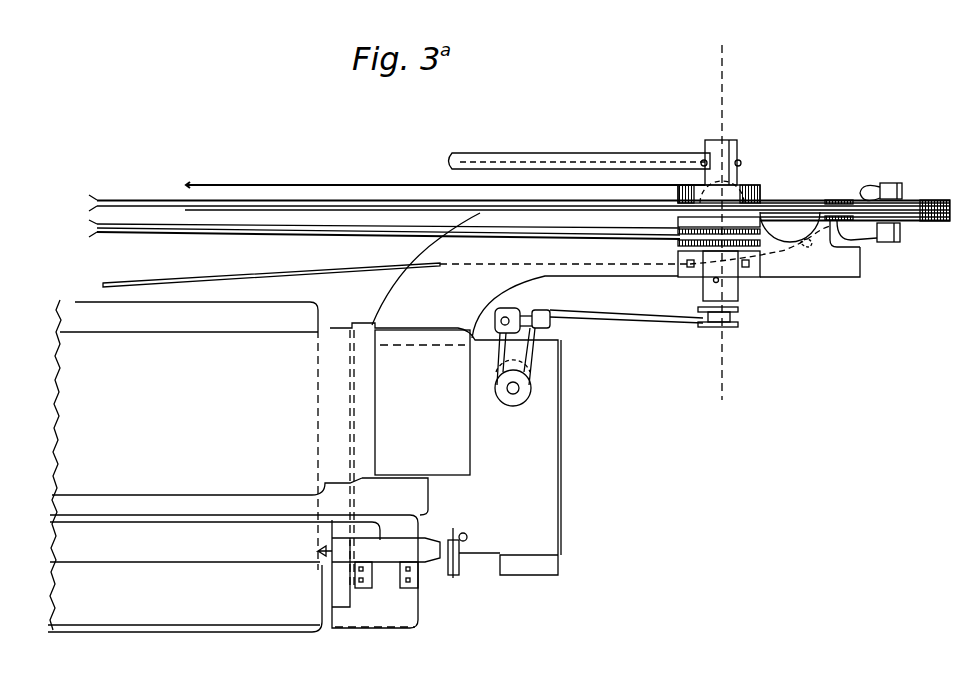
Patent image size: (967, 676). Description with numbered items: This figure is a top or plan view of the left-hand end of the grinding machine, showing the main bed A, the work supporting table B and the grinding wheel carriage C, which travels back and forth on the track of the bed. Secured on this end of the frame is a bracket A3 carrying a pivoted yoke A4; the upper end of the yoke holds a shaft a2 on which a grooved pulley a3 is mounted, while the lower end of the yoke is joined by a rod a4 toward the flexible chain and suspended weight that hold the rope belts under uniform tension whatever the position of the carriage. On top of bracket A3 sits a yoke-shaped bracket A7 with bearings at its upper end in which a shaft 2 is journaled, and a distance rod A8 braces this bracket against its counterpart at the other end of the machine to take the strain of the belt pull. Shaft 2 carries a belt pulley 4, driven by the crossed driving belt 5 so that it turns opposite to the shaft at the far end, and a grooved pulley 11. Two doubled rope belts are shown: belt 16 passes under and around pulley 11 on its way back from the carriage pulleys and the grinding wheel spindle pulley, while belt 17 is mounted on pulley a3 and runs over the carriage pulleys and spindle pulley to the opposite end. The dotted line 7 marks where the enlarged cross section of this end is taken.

The shaft 2 is at (721, 149).
The belt pulley 4 is at (742, 180).
The driving belt 5 is at (347, 188).
The dotted line 7 is at (715, 226).
The grooved pulley 11 is at (740, 290).
The rope belt 16 is at (152, 226).
The rope belt 17 is at (855, 210).
The main bed A is at (369, 433).
The work supporting table B is at (409, 581).
The grinding wheel carriage C is at (229, 466).
The bracket A3 is at (815, 267).
The pivoted yoke A4 is at (846, 218).
The yoke-shaped bracket A7 is at (733, 202).
The distance rod A8 is at (580, 146).
The shaft a2 is at (900, 183).
The grooved pulley a3 is at (922, 222).
The rod a4 is at (304, 280).